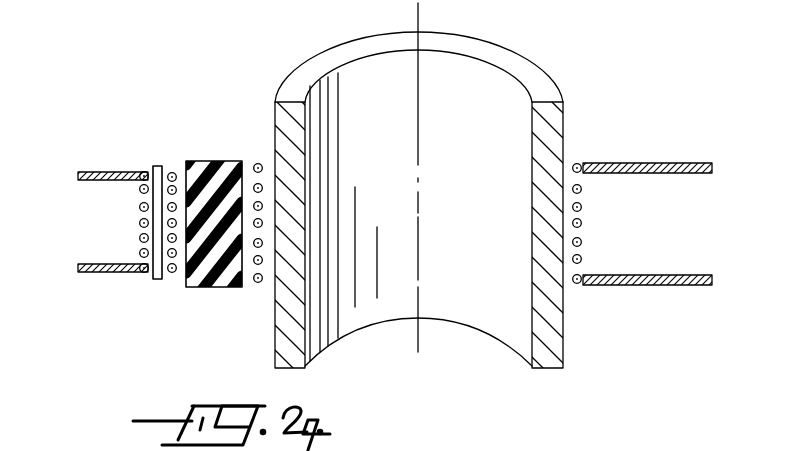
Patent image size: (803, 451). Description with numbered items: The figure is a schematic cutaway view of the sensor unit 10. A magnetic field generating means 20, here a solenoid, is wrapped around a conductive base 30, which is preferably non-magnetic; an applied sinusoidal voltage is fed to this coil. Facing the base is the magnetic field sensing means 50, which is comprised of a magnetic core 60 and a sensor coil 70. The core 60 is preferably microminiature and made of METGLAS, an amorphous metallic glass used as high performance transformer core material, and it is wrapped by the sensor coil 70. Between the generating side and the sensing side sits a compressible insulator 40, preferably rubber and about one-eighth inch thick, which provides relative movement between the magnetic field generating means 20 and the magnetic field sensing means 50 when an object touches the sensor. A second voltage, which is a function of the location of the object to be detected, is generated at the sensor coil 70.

The sensor unit 10 is at (248, 78).
The magnetic field generating means 20 is at (585, 223).
The conductive base 30 is at (543, 83).
The compressible insulator 40 is at (218, 167).
The magnetic field sensing means 50 is at (175, 150).
The magnetic core 60 is at (157, 166).
The sensor coil 70 is at (142, 206).